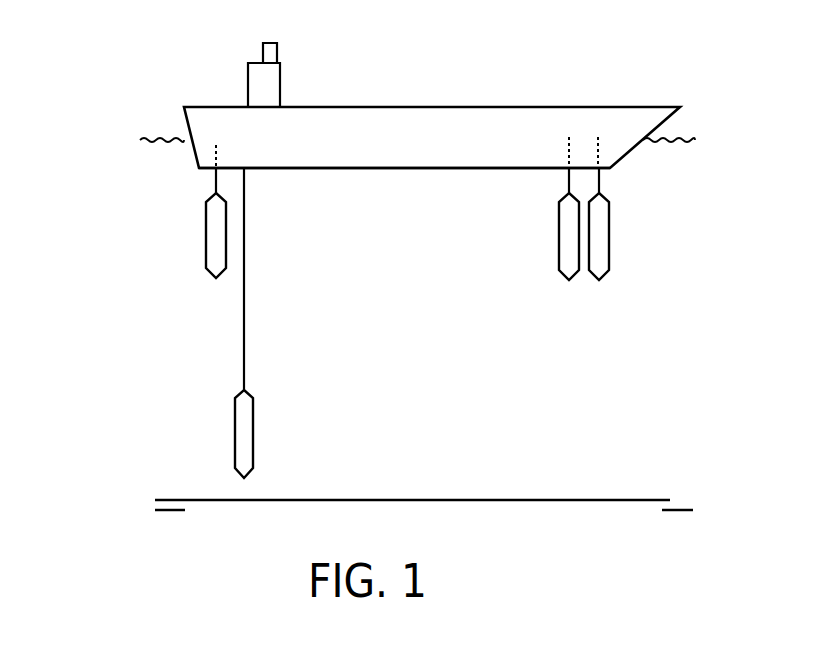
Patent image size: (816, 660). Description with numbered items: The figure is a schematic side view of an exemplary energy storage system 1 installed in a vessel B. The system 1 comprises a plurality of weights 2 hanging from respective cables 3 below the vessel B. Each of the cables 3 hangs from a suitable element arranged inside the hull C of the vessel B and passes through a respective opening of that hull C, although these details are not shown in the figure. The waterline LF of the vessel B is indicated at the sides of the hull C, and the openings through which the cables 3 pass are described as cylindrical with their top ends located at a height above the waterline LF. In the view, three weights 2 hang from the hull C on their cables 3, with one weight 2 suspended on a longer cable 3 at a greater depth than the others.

The energy storage system 1 is at (78, 73).
The weights 2 is at (218, 233).
The cables 3 is at (215, 178).
The vessel B is at (525, 88).
The hull C is at (392, 158).
The waterline LF is at (404, 140).